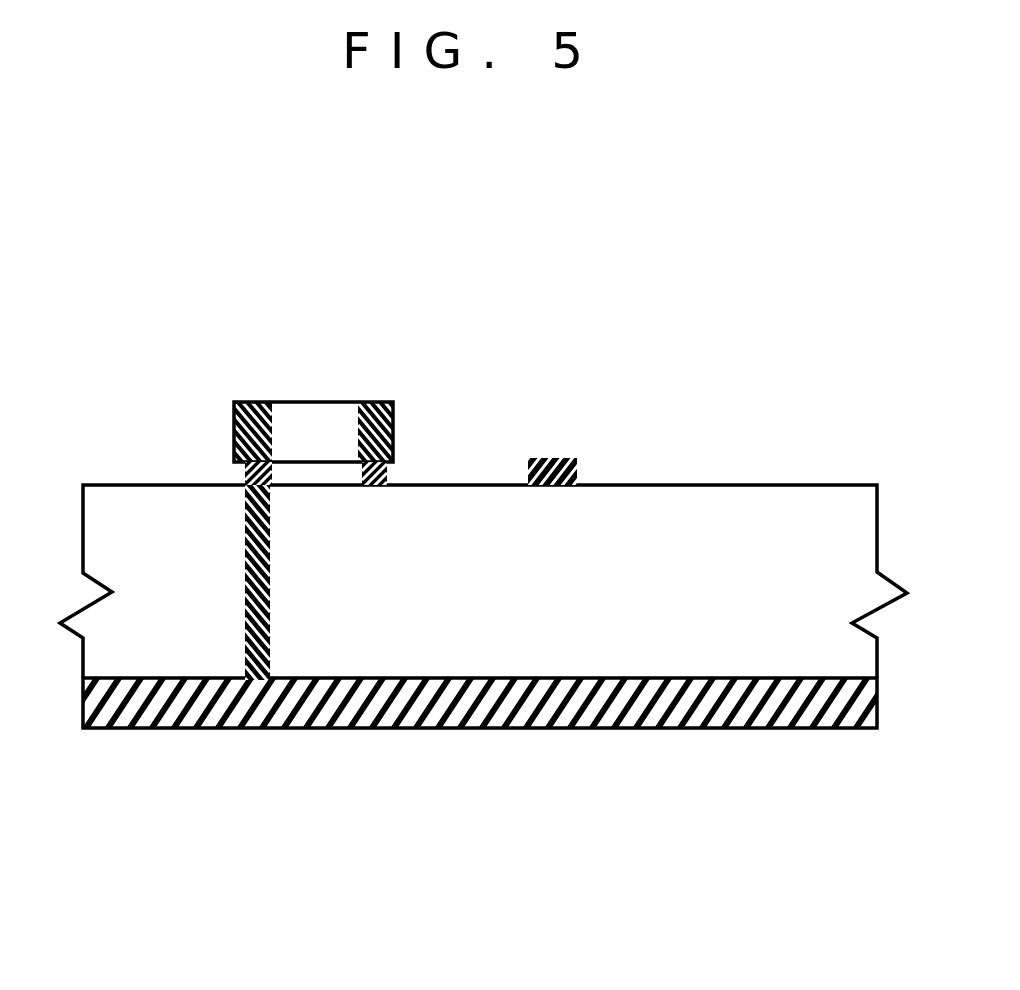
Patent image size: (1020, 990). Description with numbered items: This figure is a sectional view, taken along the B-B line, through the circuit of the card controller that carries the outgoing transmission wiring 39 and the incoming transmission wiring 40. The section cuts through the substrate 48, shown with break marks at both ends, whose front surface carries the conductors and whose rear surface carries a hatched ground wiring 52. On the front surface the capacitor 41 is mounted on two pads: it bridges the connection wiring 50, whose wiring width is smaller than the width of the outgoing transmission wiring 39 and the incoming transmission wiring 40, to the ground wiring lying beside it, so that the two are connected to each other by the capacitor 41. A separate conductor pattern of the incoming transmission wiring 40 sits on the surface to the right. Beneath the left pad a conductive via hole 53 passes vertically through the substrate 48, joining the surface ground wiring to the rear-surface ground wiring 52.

The outgoing transmission wiring 39 is at (385, 475).
The incoming transmission wiring 40 is at (557, 458).
The capacitor 41 is at (321, 404).
The substrate 48 is at (741, 485).
The connection wiring 50 is at (245, 470).
The ground wiring 52 is at (667, 728).
The conductive via hole 53 is at (270, 588).